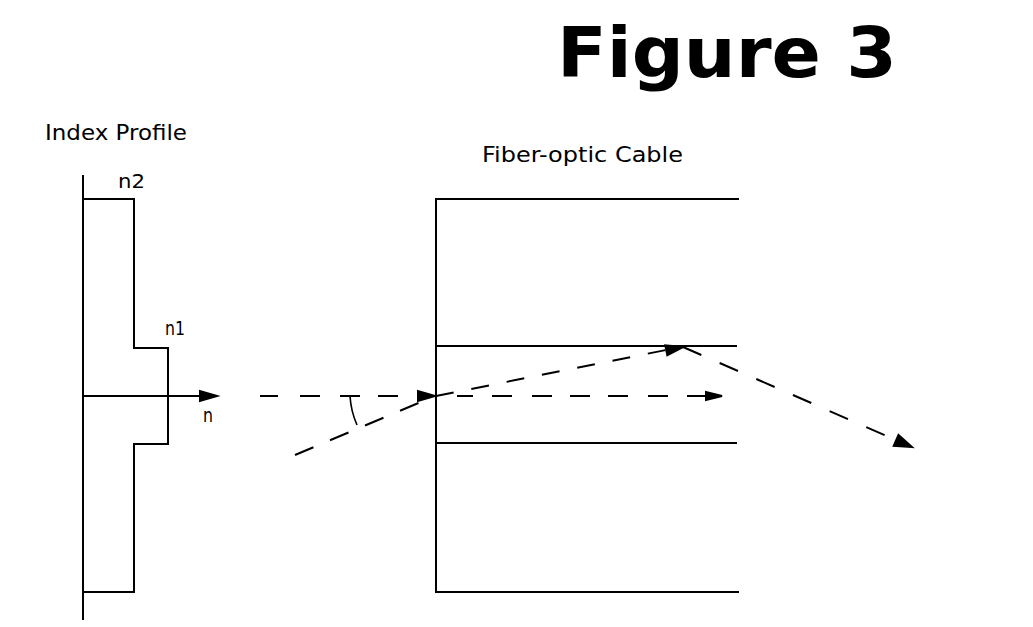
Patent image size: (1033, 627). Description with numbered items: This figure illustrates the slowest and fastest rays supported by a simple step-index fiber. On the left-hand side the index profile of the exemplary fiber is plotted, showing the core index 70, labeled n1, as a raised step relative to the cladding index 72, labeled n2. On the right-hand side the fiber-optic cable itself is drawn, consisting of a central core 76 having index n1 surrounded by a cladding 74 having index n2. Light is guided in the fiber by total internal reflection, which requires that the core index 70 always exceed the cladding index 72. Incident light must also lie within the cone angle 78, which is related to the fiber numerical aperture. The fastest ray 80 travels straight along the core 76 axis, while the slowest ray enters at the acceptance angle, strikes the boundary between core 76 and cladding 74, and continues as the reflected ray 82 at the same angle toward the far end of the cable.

The core index 70 is at (157, 428).
The cladding index 72 is at (118, 255).
The cladding 74 is at (718, 313).
The core 76 is at (722, 420).
The cone angle 78 is at (282, 420).
The fastest ray along core axis 80 is at (508, 400).
The slowest ray reflected at core-cladding boundary 82 is at (820, 405).